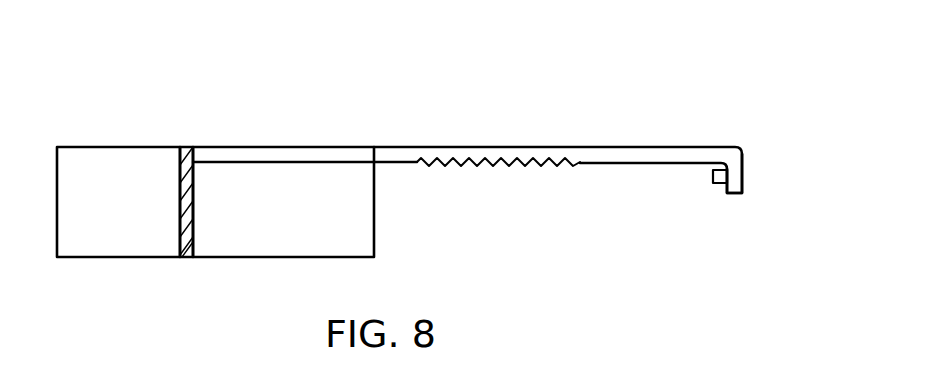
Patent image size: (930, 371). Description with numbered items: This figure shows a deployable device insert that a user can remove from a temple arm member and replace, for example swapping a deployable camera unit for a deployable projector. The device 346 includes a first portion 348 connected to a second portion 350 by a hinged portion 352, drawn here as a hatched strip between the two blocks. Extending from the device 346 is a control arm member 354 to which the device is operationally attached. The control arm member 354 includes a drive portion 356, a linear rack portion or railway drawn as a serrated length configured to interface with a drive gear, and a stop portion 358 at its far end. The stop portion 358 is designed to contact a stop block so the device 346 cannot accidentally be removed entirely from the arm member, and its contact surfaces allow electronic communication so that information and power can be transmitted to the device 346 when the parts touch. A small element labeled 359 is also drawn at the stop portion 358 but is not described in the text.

The device 346 is at (436, 167).
The first portion 348 is at (97, 147).
The second portion 350 is at (277, 147).
The hinged portion 352 is at (186, 147).
The control arm member 354 is at (503, 147).
The drive portion 356 is at (520, 166).
The stop portion 358 is at (743, 152).
The tab 359 is at (713, 178).